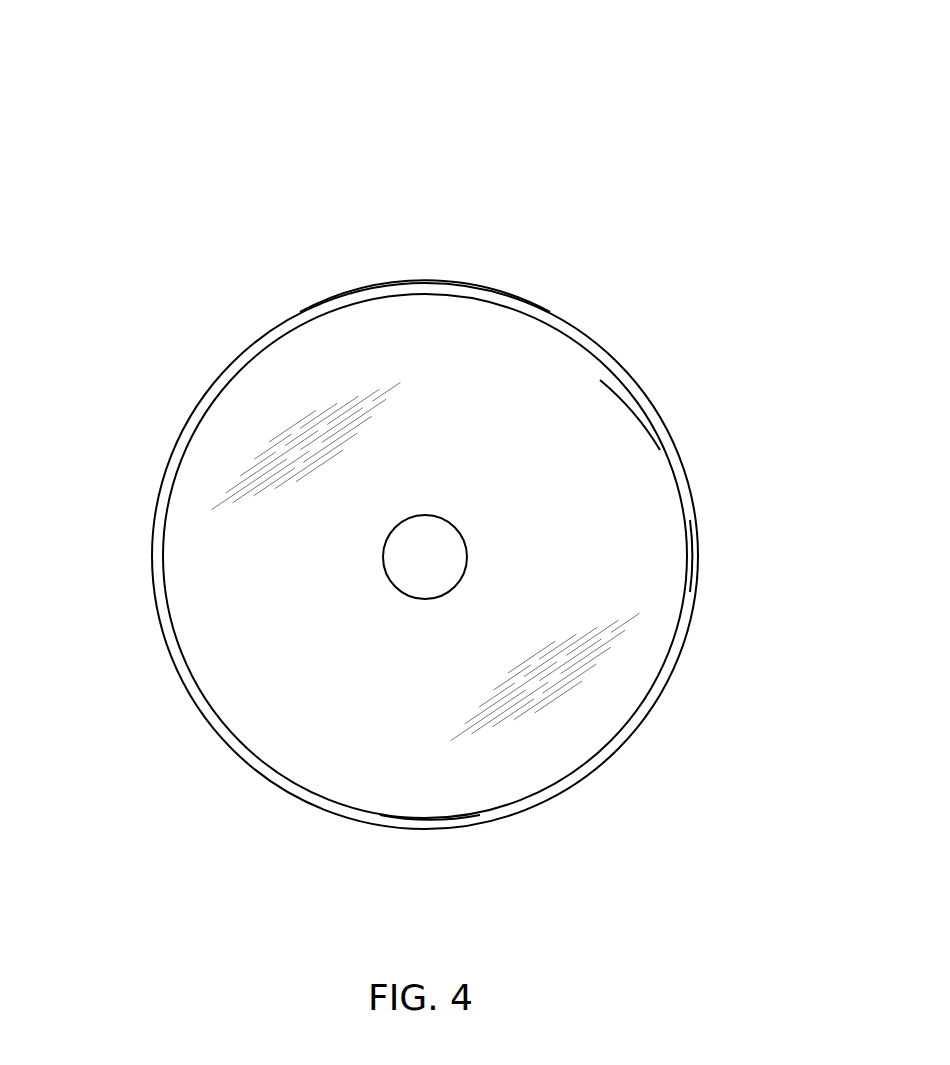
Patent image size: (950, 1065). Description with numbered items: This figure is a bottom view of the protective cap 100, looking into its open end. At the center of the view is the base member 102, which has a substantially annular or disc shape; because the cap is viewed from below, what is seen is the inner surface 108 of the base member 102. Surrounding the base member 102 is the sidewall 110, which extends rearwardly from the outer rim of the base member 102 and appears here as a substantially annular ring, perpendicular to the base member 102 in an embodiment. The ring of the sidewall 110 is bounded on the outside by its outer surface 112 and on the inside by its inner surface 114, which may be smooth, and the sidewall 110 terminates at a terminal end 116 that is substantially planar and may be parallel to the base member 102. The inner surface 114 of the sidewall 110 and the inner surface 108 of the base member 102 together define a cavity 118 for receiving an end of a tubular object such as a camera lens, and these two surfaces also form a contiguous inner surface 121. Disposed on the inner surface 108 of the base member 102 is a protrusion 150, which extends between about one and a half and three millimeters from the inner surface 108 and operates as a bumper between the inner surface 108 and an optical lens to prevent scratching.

The protective cap 100 is at (145, 80).
The base member 102 is at (600, 500).
The inner surface of the base member 108 is at (590, 679).
The sidewall 110 is at (547, 310).
The outer surface of the sidewall 112 is at (698, 555).
The inner surface of the sidewall 114 is at (635, 403).
The terminal end 116 is at (413, 292).
The cavity 118 is at (335, 358).
The contiguous inner surface 121 is at (455, 755).
The protrusion 150 is at (410, 552).